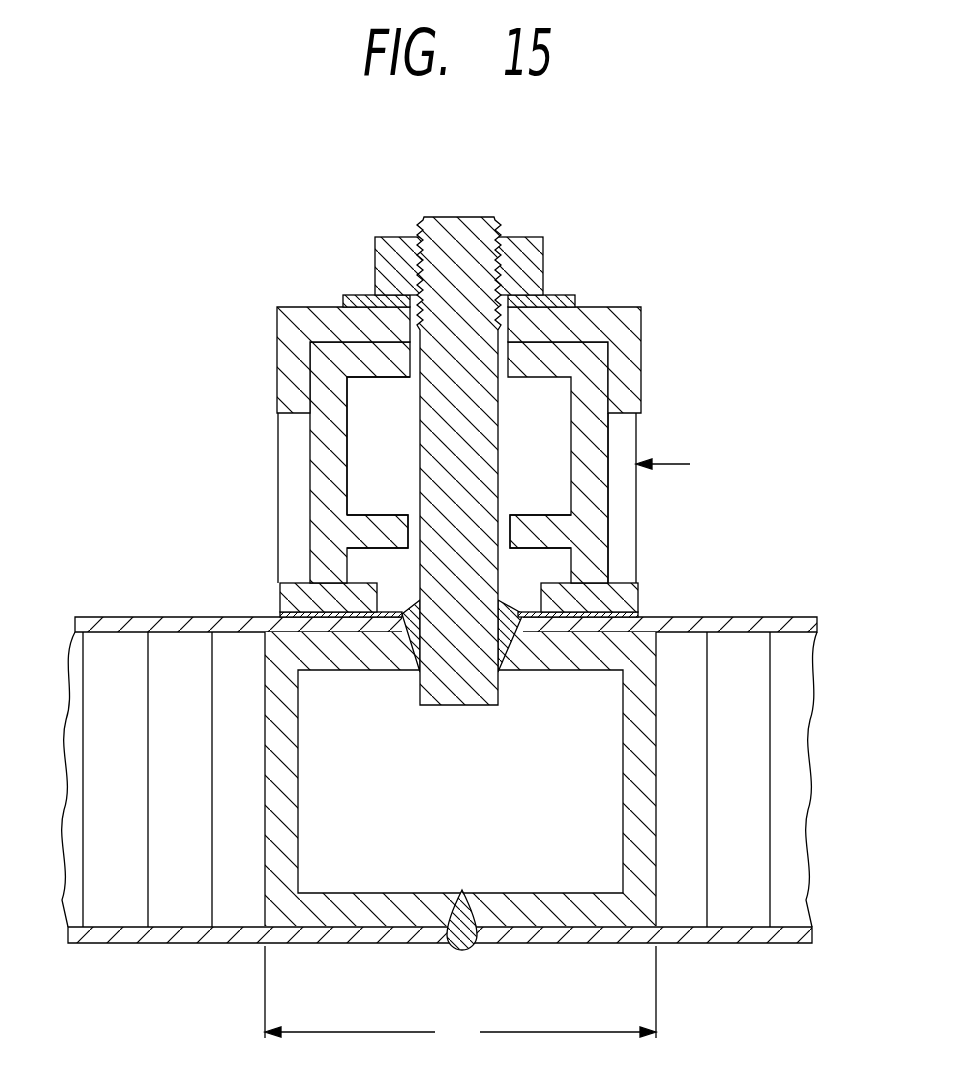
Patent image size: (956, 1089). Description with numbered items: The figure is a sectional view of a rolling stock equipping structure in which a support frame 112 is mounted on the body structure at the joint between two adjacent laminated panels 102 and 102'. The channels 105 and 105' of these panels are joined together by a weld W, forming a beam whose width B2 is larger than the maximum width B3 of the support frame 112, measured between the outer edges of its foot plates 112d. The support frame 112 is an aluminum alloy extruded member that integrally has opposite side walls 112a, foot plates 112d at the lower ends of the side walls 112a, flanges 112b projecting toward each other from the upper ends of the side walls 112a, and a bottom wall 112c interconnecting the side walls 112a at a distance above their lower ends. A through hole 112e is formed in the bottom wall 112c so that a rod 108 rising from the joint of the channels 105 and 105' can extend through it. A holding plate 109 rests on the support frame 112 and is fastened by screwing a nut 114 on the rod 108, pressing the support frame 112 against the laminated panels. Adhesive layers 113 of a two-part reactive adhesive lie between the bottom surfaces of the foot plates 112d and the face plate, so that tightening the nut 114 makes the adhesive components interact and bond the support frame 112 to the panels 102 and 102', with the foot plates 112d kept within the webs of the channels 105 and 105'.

The laminated panel 102 is at (260, 743).
The laminated panel 102' is at (638, 735).
The channel 105 is at (362, 779).
The channel 105' is at (557, 779).
The rod 108 is at (440, 220).
The holding plate 109 is at (617, 307).
The support frame 112 is at (317, 452).
The side wall 112a is at (608, 438).
The flange 112b is at (386, 378).
The bottom wall 112c is at (385, 512).
The foot plate 112d is at (296, 583).
The through hole 112e is at (508, 512).
The adhesive layer 113 is at (636, 590).
The nut 114 is at (522, 240).
The weld W is at (472, 950).
The beam width B2 is at (460, 999).
The maximum support frame width B3 is at (681, 464).